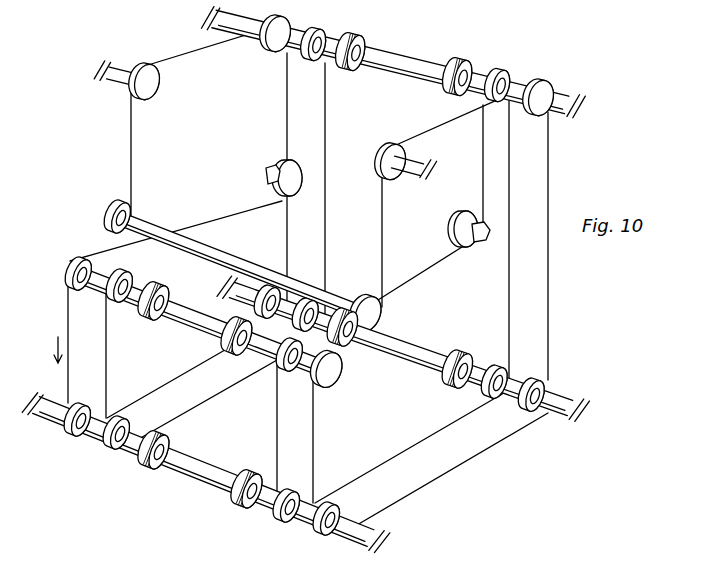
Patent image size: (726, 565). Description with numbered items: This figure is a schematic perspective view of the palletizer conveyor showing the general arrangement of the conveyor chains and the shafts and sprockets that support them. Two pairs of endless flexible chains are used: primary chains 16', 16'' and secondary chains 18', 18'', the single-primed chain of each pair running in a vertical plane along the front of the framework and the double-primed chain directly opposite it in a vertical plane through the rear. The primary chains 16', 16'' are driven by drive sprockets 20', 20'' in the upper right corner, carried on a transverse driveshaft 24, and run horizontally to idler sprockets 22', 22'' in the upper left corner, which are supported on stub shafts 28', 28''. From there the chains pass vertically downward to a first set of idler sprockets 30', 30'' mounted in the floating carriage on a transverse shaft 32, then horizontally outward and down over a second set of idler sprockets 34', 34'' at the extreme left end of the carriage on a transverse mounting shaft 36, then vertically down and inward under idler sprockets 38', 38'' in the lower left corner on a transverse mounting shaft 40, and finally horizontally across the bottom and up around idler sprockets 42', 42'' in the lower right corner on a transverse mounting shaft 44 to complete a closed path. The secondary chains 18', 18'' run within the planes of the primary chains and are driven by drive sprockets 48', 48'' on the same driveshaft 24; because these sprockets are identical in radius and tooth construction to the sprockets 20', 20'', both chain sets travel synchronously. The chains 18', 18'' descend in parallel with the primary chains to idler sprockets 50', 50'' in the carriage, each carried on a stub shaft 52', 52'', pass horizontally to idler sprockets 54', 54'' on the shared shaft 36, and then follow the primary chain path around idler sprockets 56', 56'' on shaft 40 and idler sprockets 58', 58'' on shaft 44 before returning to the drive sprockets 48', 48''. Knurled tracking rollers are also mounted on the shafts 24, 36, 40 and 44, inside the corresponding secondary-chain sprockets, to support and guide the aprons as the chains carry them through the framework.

The primary chain 16'' is at (43, 343).
The secondary chain 18'' is at (126, 355).
The primary chain 16' is at (332, 441).
The secondary chain 18' is at (293, 427).
The drive sprocket 20'' is at (260, 44).
The drive sprocket 20' is at (556, 89).
The idler sprocket 22'' is at (156, 92).
The idler sprocket 22' is at (375, 155).
The transverse driveshaft 24 is at (410, 67).
The stub shaft 28'' is at (107, 90).
The stub shaft 28' is at (425, 156).
The idler sprocket 30'' is at (97, 216).
The idler sprocket 30' is at (382, 313).
The transverse shaft 32 is at (156, 232).
The idler sprocket 34'' is at (52, 273).
The idler sprocket 34' is at (343, 369).
The transverse mounting shaft 36 is at (217, 328).
The idler sprocket 38'' is at (64, 433).
The idler sprocket 38' is at (344, 510).
The transverse mounting shaft 40 is at (210, 476).
The idler sprocket 42'' is at (262, 281).
The idler sprocket 42' is at (554, 387).
The transverse mounting shaft 44 is at (410, 351).
The drive sprocket 48'' is at (330, 32).
The drive sprocket 48' is at (513, 72).
The idler sprocket 50'' is at (263, 182).
The idler sprocket 50' is at (449, 227).
The stub shaft 52'' is at (250, 168).
The stub shaft 52' is at (480, 248).
The idler sprocket 54'' is at (122, 304).
The idler sprocket 54' is at (268, 369).
The idler sprocket 56'' is at (103, 446).
The idler sprocket 56' is at (275, 518).
The idler sprocket 58'' is at (306, 293).
The idler sprocket 58' is at (487, 362).